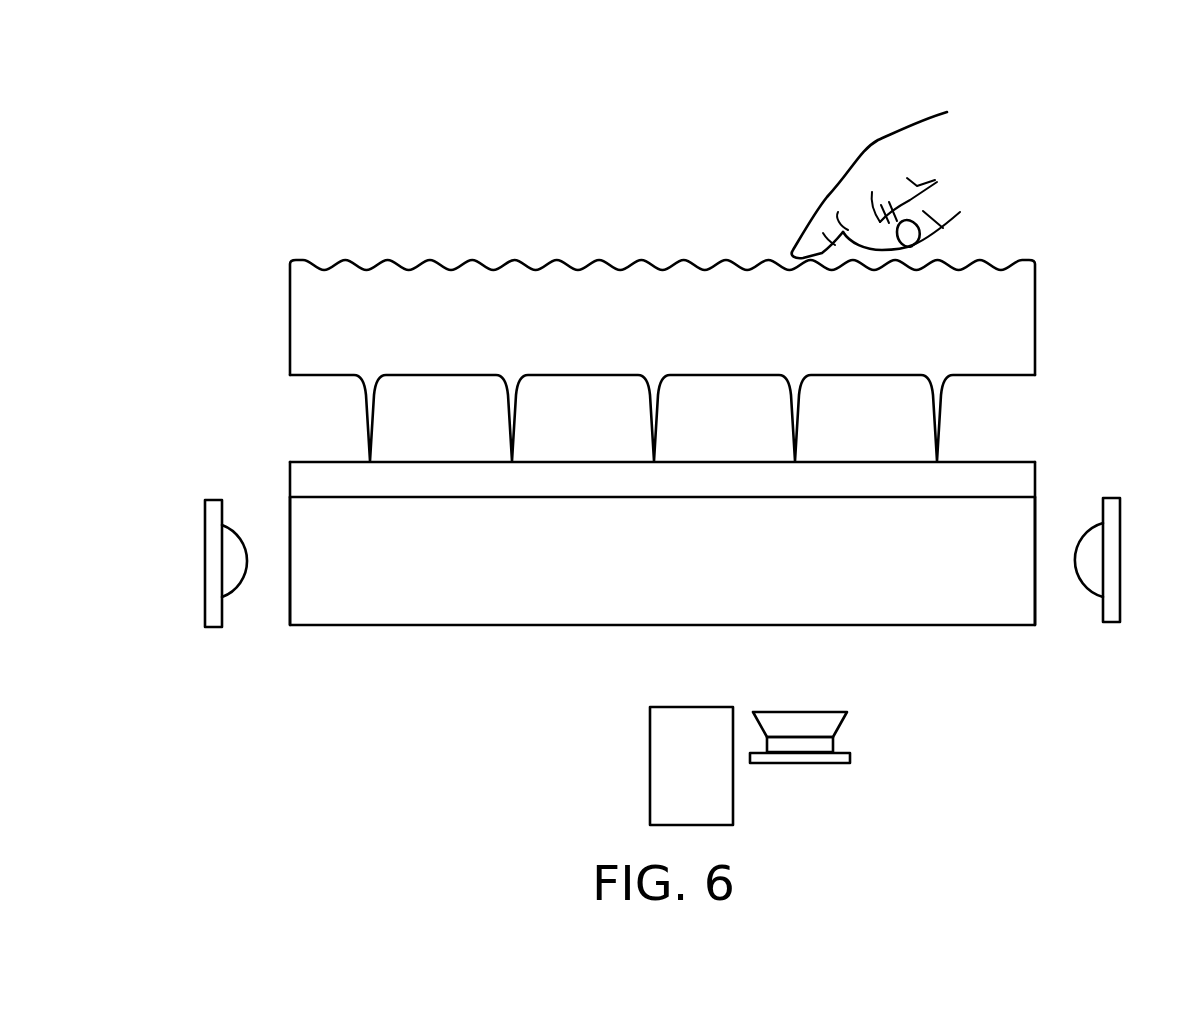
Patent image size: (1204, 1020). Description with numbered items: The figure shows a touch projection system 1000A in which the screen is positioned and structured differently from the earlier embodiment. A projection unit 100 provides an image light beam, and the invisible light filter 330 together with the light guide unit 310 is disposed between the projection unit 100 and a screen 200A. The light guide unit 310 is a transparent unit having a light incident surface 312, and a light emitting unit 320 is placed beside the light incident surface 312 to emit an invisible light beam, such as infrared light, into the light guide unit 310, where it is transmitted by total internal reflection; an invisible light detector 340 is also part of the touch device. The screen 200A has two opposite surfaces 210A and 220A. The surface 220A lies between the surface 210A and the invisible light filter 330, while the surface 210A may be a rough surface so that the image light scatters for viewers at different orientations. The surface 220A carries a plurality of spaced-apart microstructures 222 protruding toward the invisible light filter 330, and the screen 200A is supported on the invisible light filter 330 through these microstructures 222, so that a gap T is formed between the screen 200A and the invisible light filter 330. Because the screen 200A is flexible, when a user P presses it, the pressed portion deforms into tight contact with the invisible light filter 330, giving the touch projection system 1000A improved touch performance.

The touch projection system 1000A is at (1138, 867).
The screen 200A is at (1030, 341).
The surface 210A is at (1003, 267).
The surface 220A is at (999, 375).
The microstructures 222 is at (366, 402).
The gap T is at (423, 438).
The invisible light filter 330 is at (1030, 477).
The light guide unit 310 is at (1017, 512).
The light incident surface 312 is at (1040, 535).
The light emitting unit 320 is at (228, 562).
The projection unit 100 is at (658, 773).
The invisible light detector 340 is at (820, 745).
The user P is at (930, 113).